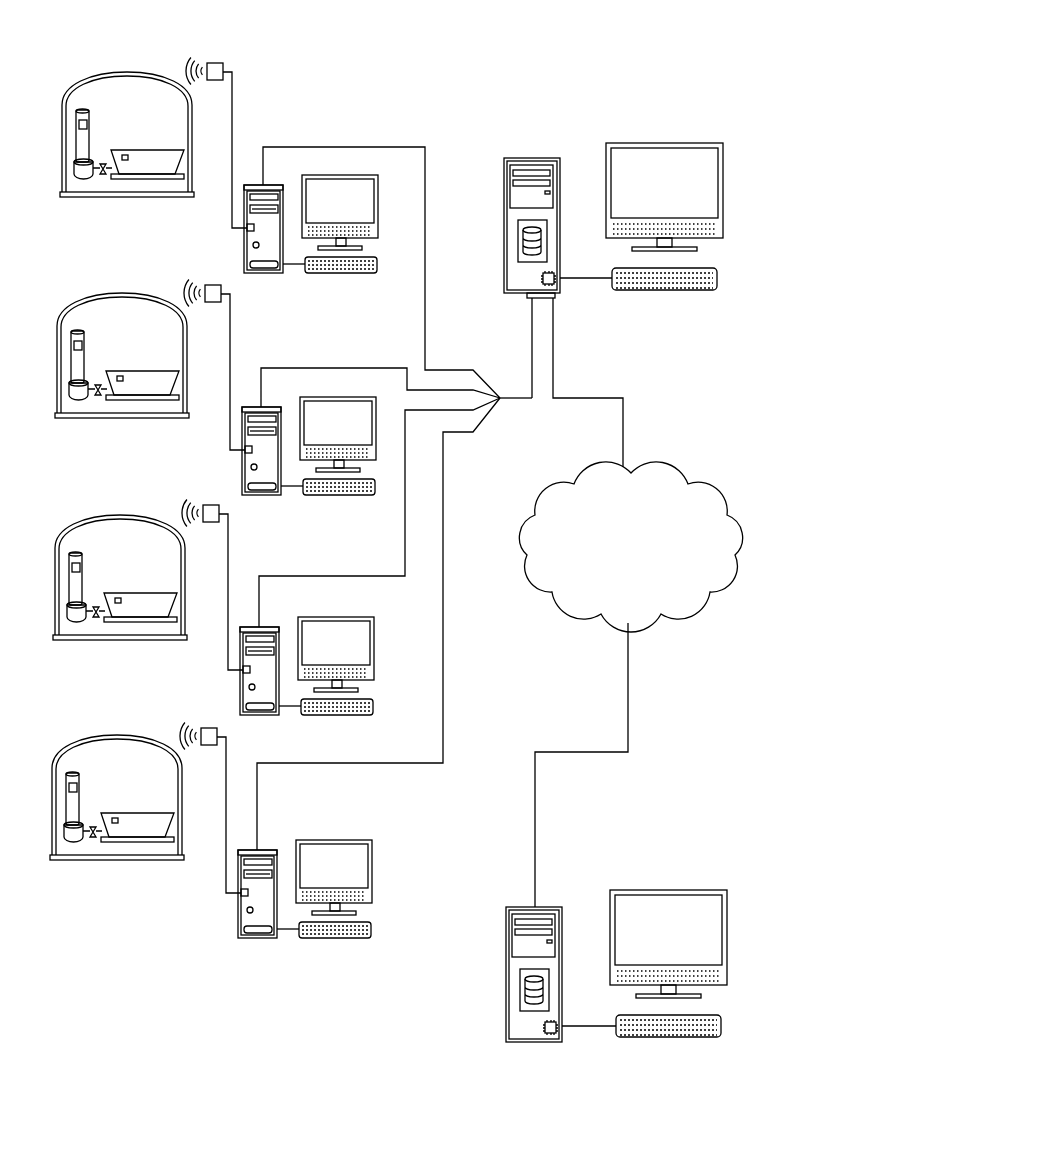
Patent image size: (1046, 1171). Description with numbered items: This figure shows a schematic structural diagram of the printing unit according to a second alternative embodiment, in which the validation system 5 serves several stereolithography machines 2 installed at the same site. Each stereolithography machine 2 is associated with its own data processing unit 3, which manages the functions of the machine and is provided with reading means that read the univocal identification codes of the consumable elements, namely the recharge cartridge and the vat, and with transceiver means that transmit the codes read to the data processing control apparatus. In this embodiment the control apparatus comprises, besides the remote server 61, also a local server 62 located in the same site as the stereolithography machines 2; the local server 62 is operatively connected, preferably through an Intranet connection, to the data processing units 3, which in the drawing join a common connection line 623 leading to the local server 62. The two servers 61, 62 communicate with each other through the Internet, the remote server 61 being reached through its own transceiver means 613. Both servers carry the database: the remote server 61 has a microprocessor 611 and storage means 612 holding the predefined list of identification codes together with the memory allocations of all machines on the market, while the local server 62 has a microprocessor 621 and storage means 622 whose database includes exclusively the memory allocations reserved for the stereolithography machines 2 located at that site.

The stereolithography machine 2 is at (92, 864).
The data processing unit 3 is at (327, 705).
The validation system 5 is at (787, 1063).
The remote server 61 is at (725, 898).
The local server 62 is at (723, 150).
The microprocessor 611 is at (557, 1033).
The storage means 612 is at (525, 986).
The transceiver means 613 is at (534, 906).
The microprocessor 621 is at (553, 284).
The storage means 622 is at (525, 240).
The connection line 623 is at (555, 298).